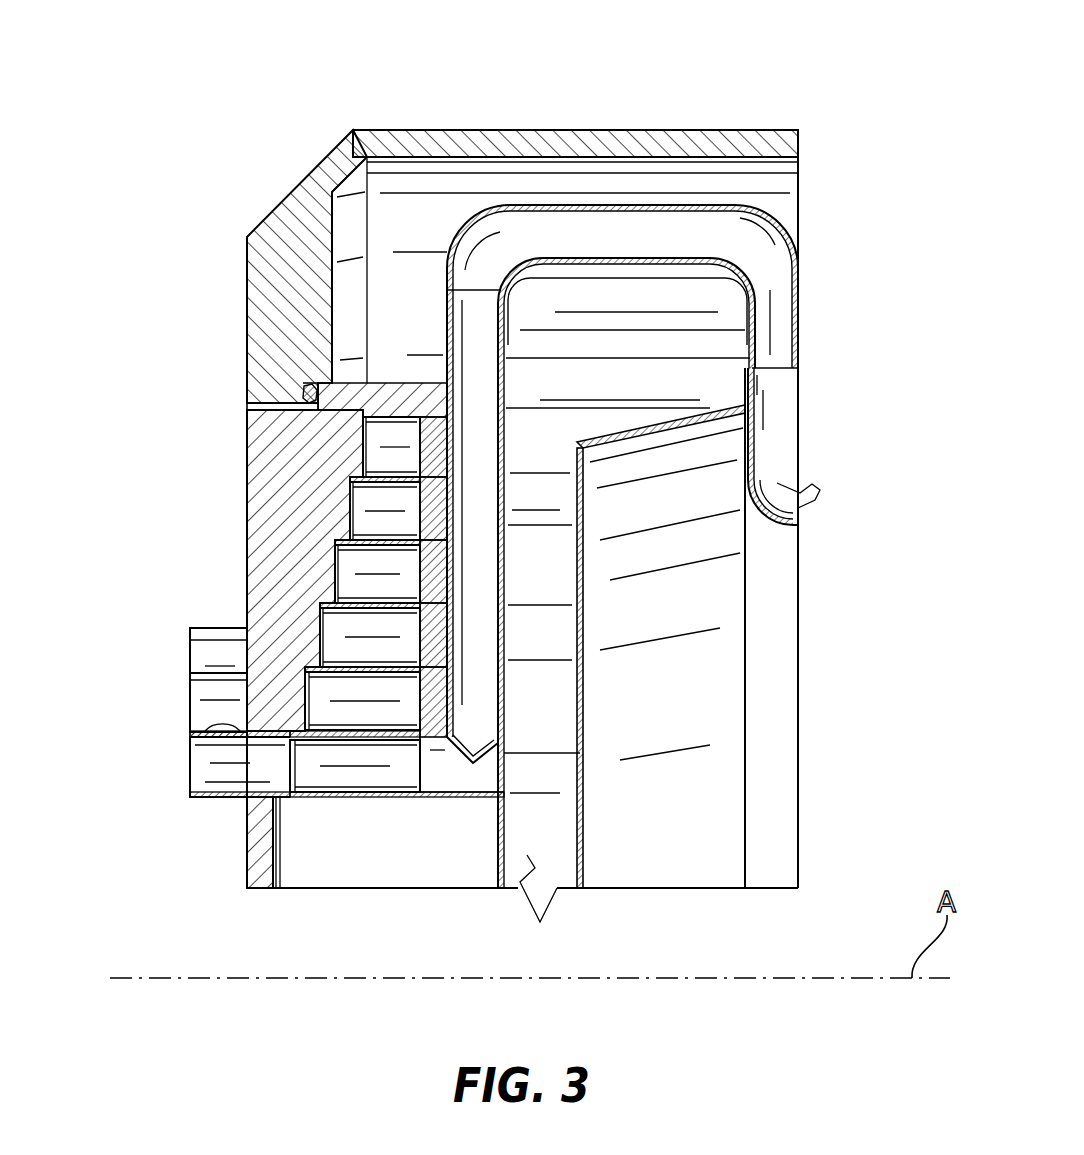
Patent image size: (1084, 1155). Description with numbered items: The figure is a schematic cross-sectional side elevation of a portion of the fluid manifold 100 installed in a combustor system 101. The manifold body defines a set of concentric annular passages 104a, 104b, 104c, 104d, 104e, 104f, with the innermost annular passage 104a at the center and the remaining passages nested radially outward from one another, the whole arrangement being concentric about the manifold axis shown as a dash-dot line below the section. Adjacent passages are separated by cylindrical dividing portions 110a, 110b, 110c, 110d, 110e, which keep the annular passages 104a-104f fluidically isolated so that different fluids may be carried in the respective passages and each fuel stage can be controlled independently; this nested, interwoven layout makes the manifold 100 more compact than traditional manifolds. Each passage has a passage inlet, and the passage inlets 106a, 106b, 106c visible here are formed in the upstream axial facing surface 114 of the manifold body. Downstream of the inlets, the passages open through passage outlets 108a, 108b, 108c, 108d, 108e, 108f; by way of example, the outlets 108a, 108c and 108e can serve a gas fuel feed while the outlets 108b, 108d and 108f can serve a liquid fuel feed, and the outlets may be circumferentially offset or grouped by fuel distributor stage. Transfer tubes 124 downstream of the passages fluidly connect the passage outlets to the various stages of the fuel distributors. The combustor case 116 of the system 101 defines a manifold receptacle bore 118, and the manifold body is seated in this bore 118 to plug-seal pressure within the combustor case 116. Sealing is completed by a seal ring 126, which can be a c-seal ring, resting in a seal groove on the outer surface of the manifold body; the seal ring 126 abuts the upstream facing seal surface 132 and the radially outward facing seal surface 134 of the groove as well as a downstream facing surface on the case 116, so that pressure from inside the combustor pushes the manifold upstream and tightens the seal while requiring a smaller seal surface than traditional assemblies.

The fluid manifold 100 is at (255, 433).
The combustor system 101 is at (495, 77).
The annular passage 104a is at (350, 770).
The annular passage 104b is at (322, 697).
The annular passage 104c is at (601, 637).
The annular passage 104d is at (614, 628).
The annular passage 104e is at (613, 440).
The annular passage 104f is at (628, 552).
The passage inlet 106a is at (237, 732).
The passage inlet 106b is at (197, 697).
The passage inlet 106c is at (210, 633).
The passage outlet 108a is at (420, 763).
The passage outlet 108b is at (651, 729).
The passage outlet 108c is at (649, 662).
The passage outlet 108d is at (652, 571).
The passage outlet 108e is at (647, 471).
The passage outlet 108f is at (648, 388).
The cylindrical dividing portion 110a is at (385, 740).
The cylindrical dividing portion 110b is at (350, 667).
The cylindrical dividing portion 110c is at (355, 602).
The cylindrical dividing portion 110d is at (372, 540).
The cylindrical dividing portion 110e is at (385, 478).
The upstream axial facing surface 114 is at (247, 578).
The combustor case 116 is at (247, 237).
The manifold receptacle bore 118 is at (247, 405).
The transfer tubes 124 is at (598, 204).
The seal ring 126 is at (311, 377).
The upstream facing seal surface 132 is at (366, 386).
The radially outward facing seal surface 134 is at (300, 389).